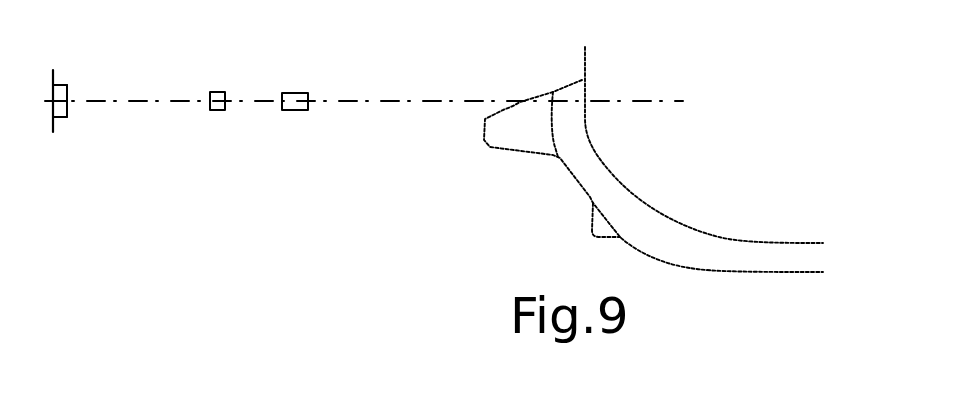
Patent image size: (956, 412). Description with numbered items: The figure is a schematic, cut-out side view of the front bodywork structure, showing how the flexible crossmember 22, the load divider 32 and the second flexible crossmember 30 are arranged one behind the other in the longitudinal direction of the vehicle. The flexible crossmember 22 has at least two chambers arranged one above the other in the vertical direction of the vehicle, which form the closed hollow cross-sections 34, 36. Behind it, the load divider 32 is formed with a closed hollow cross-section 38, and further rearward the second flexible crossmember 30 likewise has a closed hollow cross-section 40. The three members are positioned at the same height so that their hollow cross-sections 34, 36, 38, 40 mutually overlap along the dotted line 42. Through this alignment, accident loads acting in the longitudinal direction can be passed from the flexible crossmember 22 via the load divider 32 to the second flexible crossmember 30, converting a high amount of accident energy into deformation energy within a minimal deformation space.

The flexible crossmember 22 is at (58, 117).
The hollow cross-section 34 is at (70, 86).
The hollow cross-section 36 is at (72, 113).
The load divider 32 is at (215, 112).
The hollow cross-section 38 is at (224, 89).
The second flexible crossmember 30 is at (293, 112).
The hollow cross-section 40 is at (307, 89).
The dotted line 42 is at (652, 102).